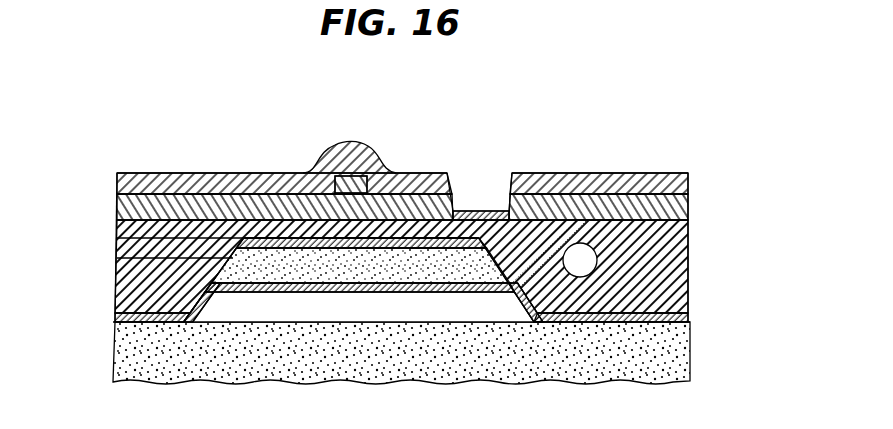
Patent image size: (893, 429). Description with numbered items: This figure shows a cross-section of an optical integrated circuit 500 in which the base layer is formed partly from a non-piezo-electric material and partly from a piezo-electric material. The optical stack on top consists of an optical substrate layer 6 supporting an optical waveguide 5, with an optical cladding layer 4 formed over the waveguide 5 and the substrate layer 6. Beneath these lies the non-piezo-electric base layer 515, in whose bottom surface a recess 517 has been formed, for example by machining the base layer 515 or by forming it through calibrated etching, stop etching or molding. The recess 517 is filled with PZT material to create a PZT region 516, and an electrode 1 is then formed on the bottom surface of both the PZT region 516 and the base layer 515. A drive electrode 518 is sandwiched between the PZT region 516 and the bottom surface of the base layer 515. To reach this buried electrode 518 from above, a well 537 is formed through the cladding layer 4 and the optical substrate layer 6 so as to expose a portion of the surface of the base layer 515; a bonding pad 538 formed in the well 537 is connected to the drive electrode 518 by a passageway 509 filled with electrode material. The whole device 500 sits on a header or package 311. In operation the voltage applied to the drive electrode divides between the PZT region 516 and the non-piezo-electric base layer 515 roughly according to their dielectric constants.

The optical integrated circuit 500 is at (151, 100).
The optical cladding layer 4 is at (215, 173).
The optical waveguide 5 is at (370, 166).
The optical substrate layer 6 is at (117, 210).
The drive electrode 518 is at (117, 240).
The PZT region 516 is at (117, 275).
The non-piezo-electric base layer 515 is at (688, 257).
The passageway 509 is at (553, 254).
The electrode 1 is at (688, 314).
The header or package 311 is at (401, 353).
The recess 517 is at (462, 312).
The well 537 is at (492, 208).
The bonding pad 538 is at (473, 208).